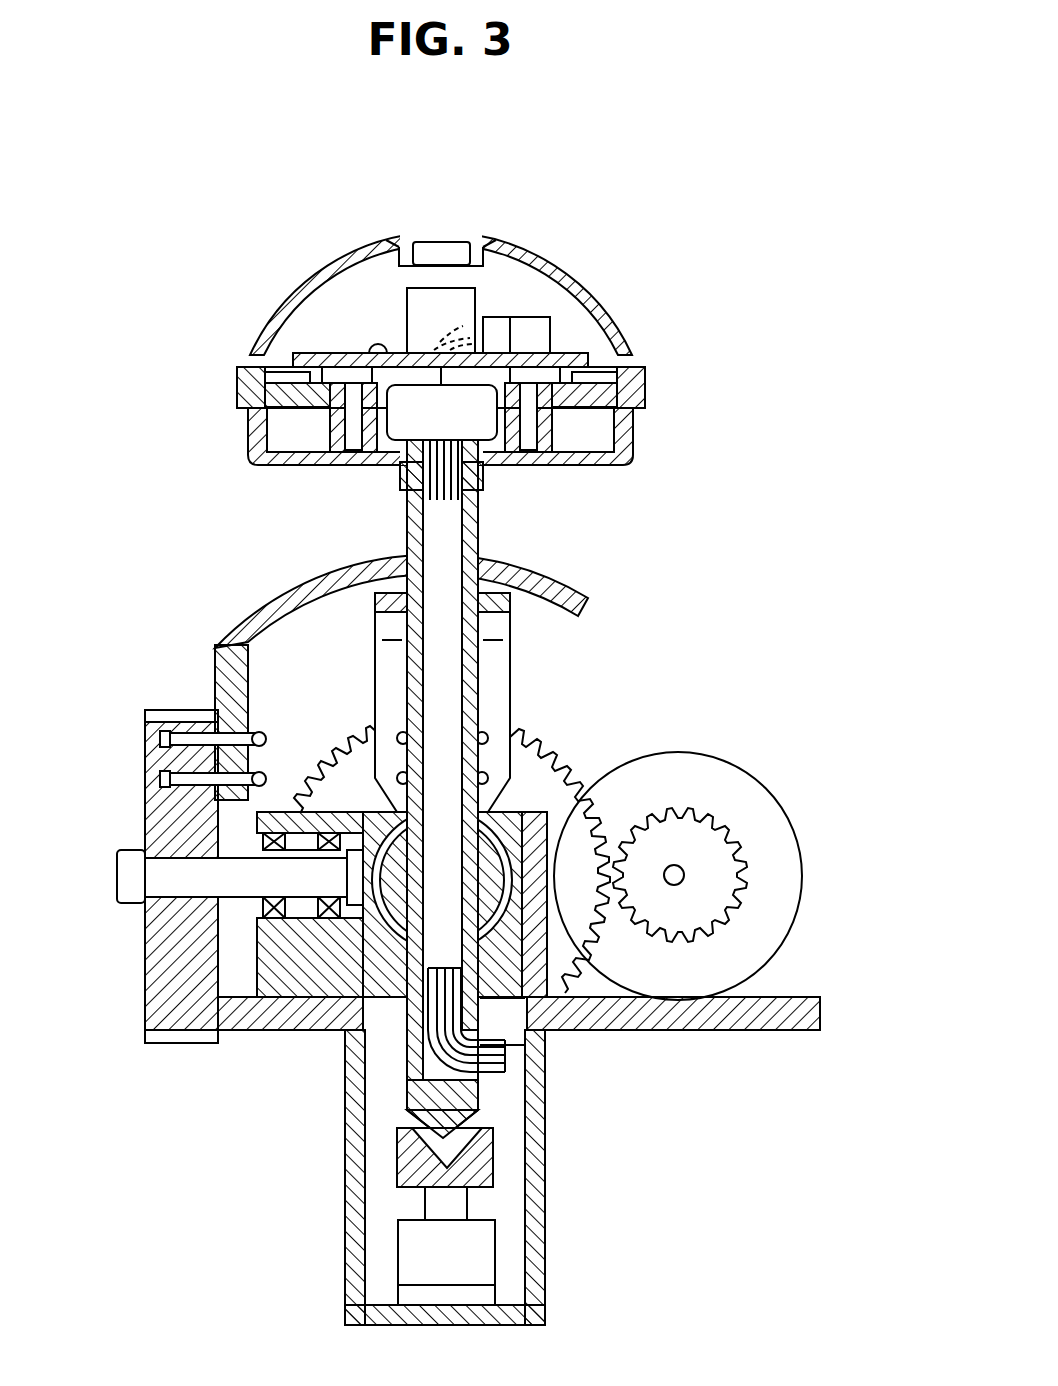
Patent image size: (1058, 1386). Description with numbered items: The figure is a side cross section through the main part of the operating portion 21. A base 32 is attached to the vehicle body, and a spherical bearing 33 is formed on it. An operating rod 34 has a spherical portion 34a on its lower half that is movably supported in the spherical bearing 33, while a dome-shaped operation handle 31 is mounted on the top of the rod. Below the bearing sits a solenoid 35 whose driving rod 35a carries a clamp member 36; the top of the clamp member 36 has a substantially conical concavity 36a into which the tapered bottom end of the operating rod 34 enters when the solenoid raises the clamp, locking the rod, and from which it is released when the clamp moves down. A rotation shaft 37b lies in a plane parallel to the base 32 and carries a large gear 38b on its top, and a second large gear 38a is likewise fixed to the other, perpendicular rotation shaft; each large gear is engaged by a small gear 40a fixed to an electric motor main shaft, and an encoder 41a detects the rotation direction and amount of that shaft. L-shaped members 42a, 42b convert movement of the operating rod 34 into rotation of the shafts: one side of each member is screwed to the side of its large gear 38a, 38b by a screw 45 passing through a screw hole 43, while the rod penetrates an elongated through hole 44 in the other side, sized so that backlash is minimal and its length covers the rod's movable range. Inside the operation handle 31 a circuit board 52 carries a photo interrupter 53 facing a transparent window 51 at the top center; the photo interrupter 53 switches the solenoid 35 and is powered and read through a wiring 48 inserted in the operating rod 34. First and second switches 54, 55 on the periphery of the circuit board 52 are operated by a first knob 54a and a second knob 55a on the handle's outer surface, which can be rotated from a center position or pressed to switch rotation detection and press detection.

The operating portion 21 is at (730, 207).
The operation handle 31 is at (587, 290).
The base 32 is at (783, 1030).
The spherical bearing 33 is at (520, 900).
The operating rod 34 is at (478, 538).
The spherical portion 34a is at (400, 900).
The solenoid 35 is at (478, 1258).
The driving rod 35a is at (460, 1205).
The clamp member 36 is at (495, 1160).
The concavity 36a is at (430, 1143).
The rotation shaft 37b is at (165, 870).
The large gear 38a is at (548, 770).
The large gear 38b is at (165, 960).
The small gear 40a is at (697, 832).
The encoder 41a is at (790, 870).
The L-shaped member 42a is at (508, 680).
The L-shaped member 42b is at (275, 605).
The screw hole 43 is at (205, 778).
The through hole 44 is at (365, 570).
The screw 45 is at (262, 782).
The wiring 48 is at (460, 488).
The transparent window 51 is at (438, 235).
The circuit board 52 is at (322, 353).
The photo interrupter 53 is at (418, 318).
The first switch 54 is at (337, 377).
The first knob 54a is at (238, 382).
The second switch 55 is at (560, 410).
The second knob 55a is at (646, 376).